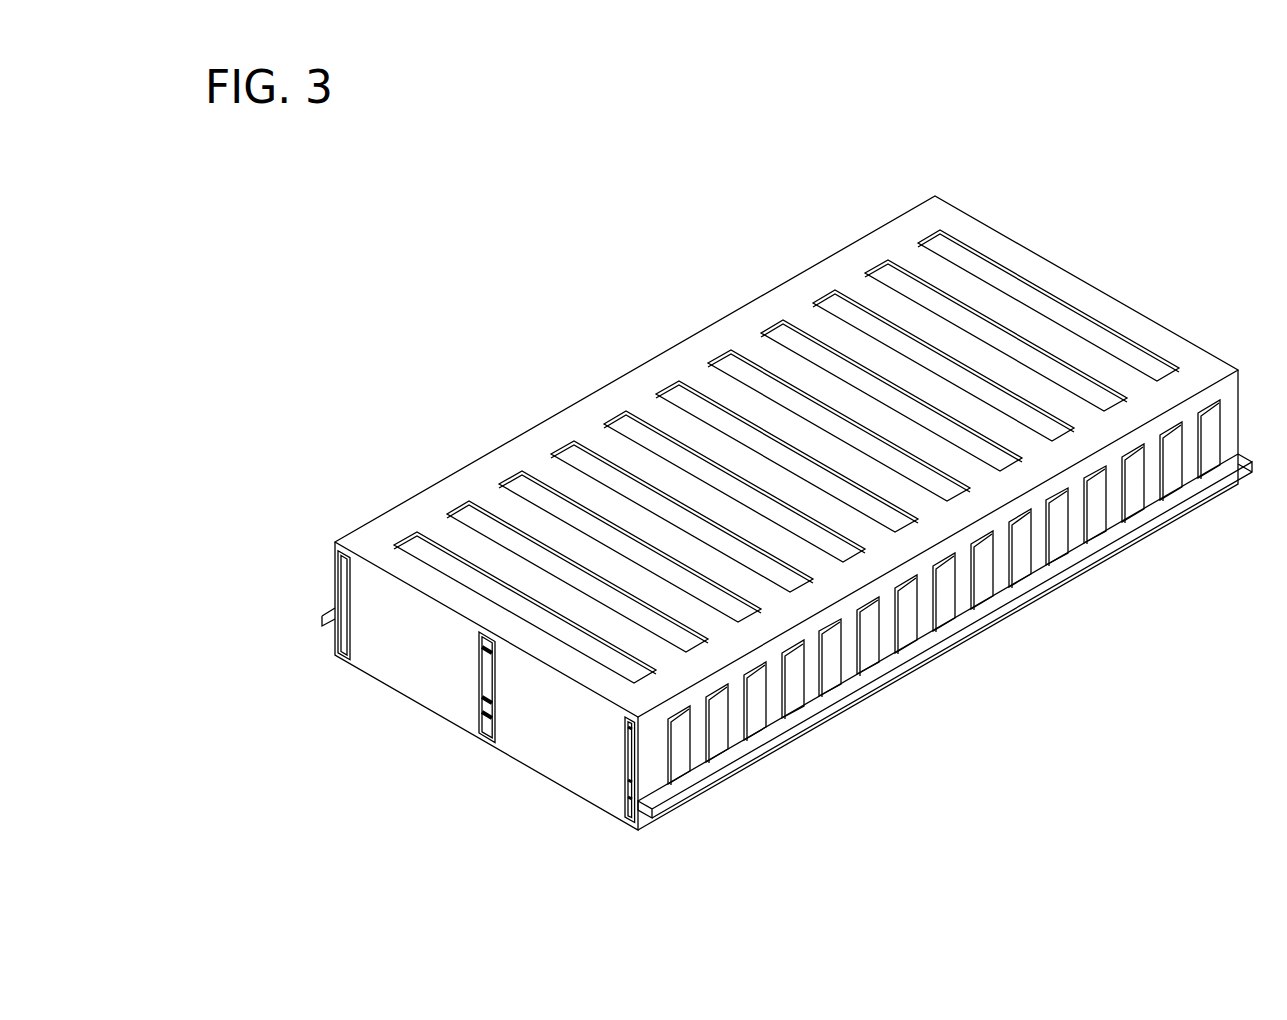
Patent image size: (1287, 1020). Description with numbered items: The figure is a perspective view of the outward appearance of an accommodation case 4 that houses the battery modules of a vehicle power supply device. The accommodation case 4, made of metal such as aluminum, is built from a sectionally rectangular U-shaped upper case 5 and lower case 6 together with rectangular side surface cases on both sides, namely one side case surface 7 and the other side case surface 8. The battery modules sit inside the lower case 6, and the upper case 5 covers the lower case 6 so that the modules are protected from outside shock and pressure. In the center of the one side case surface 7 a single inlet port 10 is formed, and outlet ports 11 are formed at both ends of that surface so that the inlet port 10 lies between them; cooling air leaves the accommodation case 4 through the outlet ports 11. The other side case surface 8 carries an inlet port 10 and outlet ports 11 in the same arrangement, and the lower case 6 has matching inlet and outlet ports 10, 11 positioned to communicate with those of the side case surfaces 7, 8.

The accommodation case 4 is at (378, 390).
The upper case 5 is at (778, 311).
The lower case 6 is at (493, 633).
The one side case surface 7 is at (557, 700).
The other side case surface 8 is at (1050, 307).
The inlet port 10 is at (485, 672).
The outlet port 11 is at (345, 582).